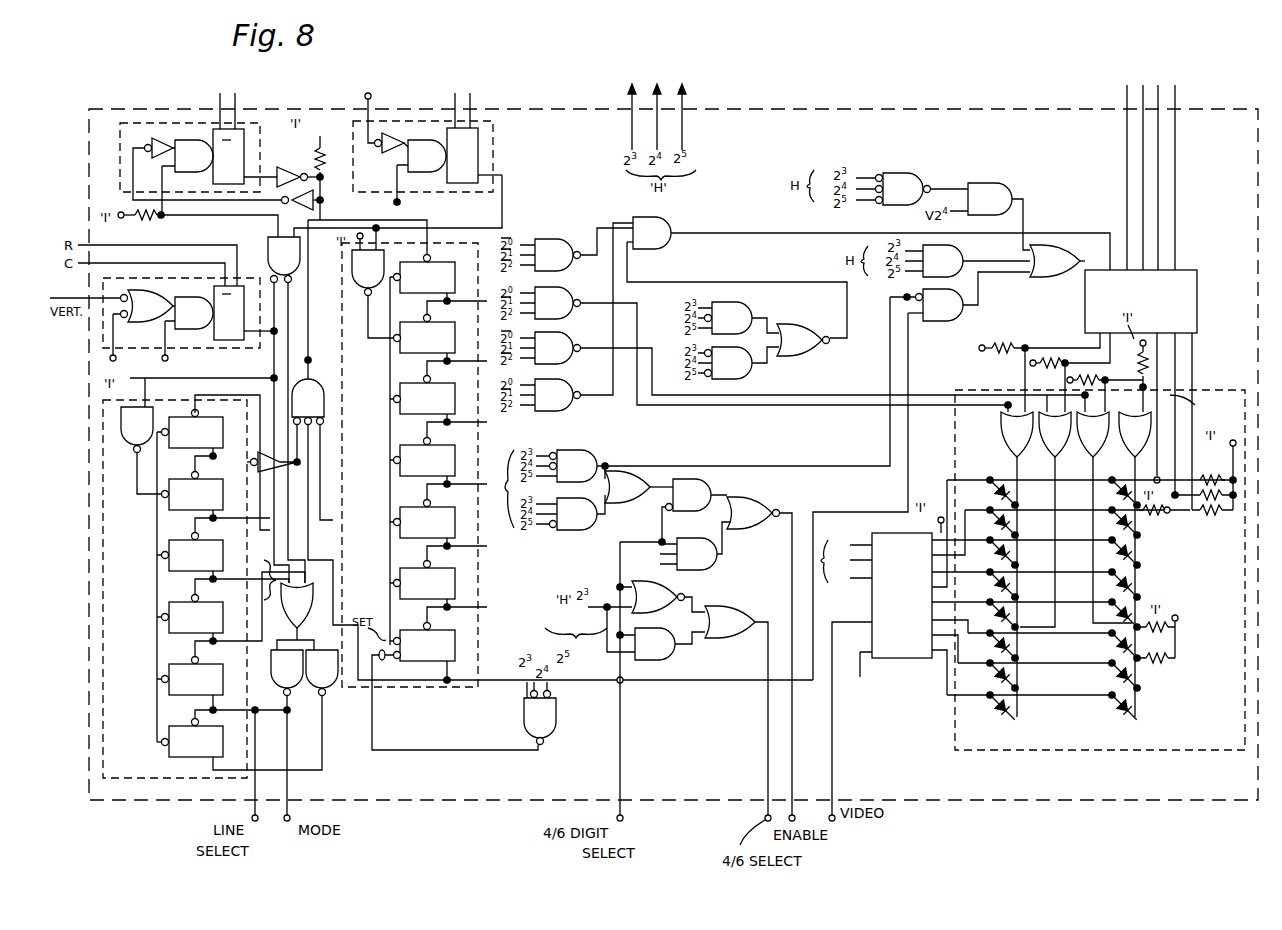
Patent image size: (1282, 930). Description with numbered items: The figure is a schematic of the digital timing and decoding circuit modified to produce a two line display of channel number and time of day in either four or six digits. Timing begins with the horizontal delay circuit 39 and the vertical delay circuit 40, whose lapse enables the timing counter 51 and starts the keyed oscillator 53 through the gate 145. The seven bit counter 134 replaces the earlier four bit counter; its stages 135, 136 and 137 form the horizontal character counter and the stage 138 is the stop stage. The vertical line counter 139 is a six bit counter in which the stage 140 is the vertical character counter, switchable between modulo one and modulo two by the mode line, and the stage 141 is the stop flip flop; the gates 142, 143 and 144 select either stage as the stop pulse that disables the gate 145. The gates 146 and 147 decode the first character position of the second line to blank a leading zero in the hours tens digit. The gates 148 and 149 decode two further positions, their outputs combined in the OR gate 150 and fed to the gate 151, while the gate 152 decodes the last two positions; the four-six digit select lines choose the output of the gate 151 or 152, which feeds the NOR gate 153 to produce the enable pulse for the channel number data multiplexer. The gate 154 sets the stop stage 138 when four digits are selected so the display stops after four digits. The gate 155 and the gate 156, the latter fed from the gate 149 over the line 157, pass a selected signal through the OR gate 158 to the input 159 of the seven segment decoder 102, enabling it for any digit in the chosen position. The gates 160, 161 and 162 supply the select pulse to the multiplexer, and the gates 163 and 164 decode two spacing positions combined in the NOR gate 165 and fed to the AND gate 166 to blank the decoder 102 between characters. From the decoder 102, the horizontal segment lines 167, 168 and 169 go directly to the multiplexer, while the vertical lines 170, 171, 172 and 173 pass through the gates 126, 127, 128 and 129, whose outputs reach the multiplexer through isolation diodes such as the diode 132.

The keyed oscillator 53 is at (169, 121).
The horizontal delay circuit 39 is at (496, 149).
The vertical delay circuit 40 is at (202, 352).
The vertical line counter 139 is at (98, 537).
The vertical character counter stage 140 is at (170, 674).
The stop flip flop 141 is at (182, 748).
The selection gate 142 is at (277, 690).
The selection gate 143 is at (328, 688).
The selection gate 144 is at (292, 600).
The gate 145 is at (276, 248).
The seven bit counter 134 is at (332, 506).
The horizontal character counter stage 135 is at (398, 470).
The horizontal character counter stage 136 is at (405, 526).
The horizontal character counter stage 137 is at (405, 592).
The stop stage 138 is at (456, 642).
The decoding gate 146 is at (905, 173).
The decoding gate 147 is at (1000, 184).
The decoding gate 148 is at (580, 525).
The decoding gate 149 is at (584, 458).
The OR gate 150 is at (645, 470).
The gate 151 is at (700, 488).
The gate 152 is at (700, 566).
The NOR gate 153 is at (762, 505).
The gate 154 is at (548, 728).
The gate 155 is at (955, 262).
The gate 156 is at (962, 310).
The line 157 is at (790, 465).
The OR gate 158 is at (1055, 280).
The decoder input 159 is at (1082, 257).
The select gate 160 is at (648, 612).
The select gate 161 is at (660, 660).
The select gate 162 is at (732, 620).
The decoding gate 163 is at (742, 318).
The decoding gate 164 is at (742, 366).
The NOR gate 165 is at (800, 345).
The AND gate 166 is at (665, 245).
The horizontal segment line 167 is at (1193, 356).
The horizontal segment line 168 is at (1176, 368).
The horizontal segment line 169 is at (1158, 383).
The vertical line 170 is at (1030, 350).
The vertical line 171 is at (1098, 357).
The vertical line 172 is at (1116, 340).
The vertical line 173 is at (1198, 408).
The seven segment decoder 102 is at (1190, 286).
The gate 126 is at (1008, 438).
The gate 127 is at (1050, 440).
The gate 128 is at (1090, 440).
The gate 129 is at (1130, 440).
The isolation diode 132 is at (1140, 592).
The timing counter 51 is at (902, 658).